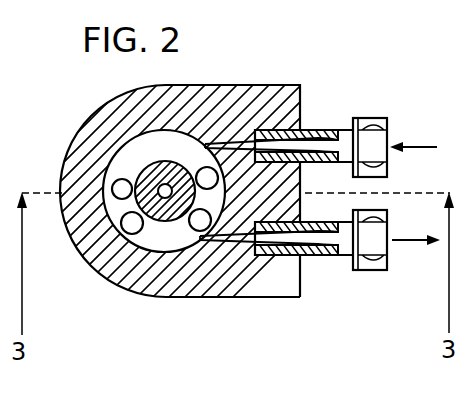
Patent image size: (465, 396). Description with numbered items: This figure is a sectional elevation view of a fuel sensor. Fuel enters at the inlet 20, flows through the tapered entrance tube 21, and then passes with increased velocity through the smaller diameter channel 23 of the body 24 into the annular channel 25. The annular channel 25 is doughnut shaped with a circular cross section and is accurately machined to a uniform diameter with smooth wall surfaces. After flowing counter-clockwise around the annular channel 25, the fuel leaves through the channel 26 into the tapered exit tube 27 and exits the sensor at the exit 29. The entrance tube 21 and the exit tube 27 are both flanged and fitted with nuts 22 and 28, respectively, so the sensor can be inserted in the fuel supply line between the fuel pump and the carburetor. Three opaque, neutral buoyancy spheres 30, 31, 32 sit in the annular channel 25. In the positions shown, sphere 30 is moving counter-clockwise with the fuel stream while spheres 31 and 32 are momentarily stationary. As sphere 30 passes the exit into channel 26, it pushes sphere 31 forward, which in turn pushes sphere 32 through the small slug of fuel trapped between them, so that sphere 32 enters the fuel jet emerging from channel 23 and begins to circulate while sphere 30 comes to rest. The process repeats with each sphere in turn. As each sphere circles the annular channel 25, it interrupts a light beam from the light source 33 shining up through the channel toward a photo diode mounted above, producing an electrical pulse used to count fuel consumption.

The inlet 20 is at (415, 146).
The tapered entrance tube 21 is at (308, 132).
The nut 22 is at (357, 118).
The channel 23 is at (235, 155).
The body 24 is at (202, 85).
The annular channel 25 is at (130, 148).
The channel 26 is at (210, 255).
The tapered exit tube 27 is at (318, 257).
The nut 28 is at (364, 272).
The exit 29 is at (405, 243).
The sphere 30 is at (93, 258).
The sphere 31 is at (148, 255).
The sphere 32 is at (183, 150).
The light source 33 is at (117, 190).